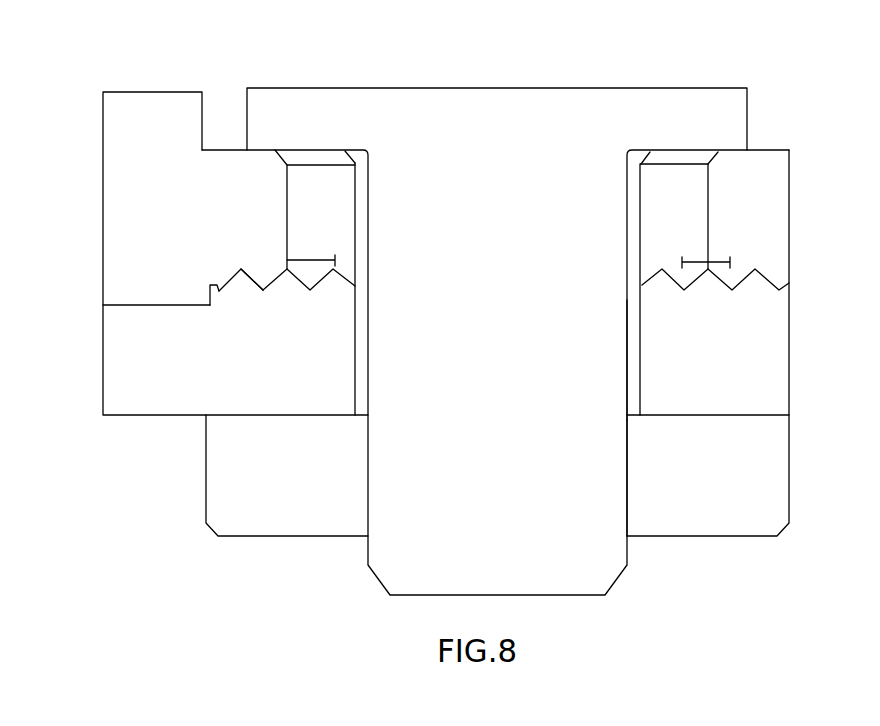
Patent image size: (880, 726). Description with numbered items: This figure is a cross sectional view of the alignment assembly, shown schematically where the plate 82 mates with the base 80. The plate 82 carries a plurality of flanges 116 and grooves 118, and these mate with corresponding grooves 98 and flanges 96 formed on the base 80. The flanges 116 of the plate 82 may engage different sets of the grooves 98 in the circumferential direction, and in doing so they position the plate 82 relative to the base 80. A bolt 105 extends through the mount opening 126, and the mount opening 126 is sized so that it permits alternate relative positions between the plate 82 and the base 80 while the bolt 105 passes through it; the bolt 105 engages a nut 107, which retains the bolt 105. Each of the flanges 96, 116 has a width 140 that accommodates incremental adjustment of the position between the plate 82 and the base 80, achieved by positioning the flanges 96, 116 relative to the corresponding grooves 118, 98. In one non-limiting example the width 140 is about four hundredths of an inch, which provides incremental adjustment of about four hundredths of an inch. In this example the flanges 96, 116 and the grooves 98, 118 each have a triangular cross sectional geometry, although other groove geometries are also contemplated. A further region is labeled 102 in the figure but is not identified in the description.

The base 80 is at (745, 372).
The plate 82 is at (208, 178).
The flanges 96 is at (249, 276).
The grooves 98 is at (226, 268).
The gap 102 is at (630, 366).
The bolt 105 is at (600, 117).
The nut 107 is at (733, 517).
The flanges 116 is at (212, 272).
The grooves 118 is at (250, 298).
The mount opening 126 is at (688, 218).
The width 140 is at (310, 262).